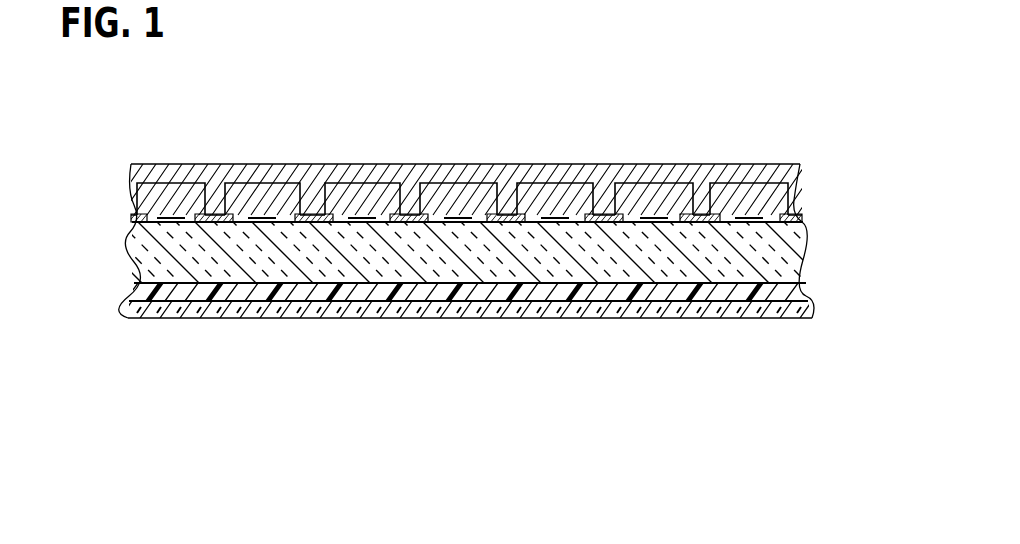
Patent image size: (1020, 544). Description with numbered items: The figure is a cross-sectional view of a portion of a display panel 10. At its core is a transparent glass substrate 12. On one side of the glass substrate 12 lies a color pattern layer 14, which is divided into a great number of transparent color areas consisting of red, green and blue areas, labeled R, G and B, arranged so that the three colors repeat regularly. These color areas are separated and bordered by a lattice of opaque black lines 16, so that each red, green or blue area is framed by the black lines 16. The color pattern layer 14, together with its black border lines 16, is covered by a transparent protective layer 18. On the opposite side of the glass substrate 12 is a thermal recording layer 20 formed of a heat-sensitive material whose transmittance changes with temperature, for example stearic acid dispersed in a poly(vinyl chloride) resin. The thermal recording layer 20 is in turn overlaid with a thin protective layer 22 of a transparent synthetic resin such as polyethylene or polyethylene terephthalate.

The display panel 10 is at (610, 146).
The transparent glass substrate 12 is at (778, 257).
The color pattern layer 14 is at (135, 202).
The black lines 16 is at (318, 213).
The transparent protective layer 18 is at (488, 172).
The thermal recording layer 20 is at (790, 290).
The protective layer 22 is at (641, 312).